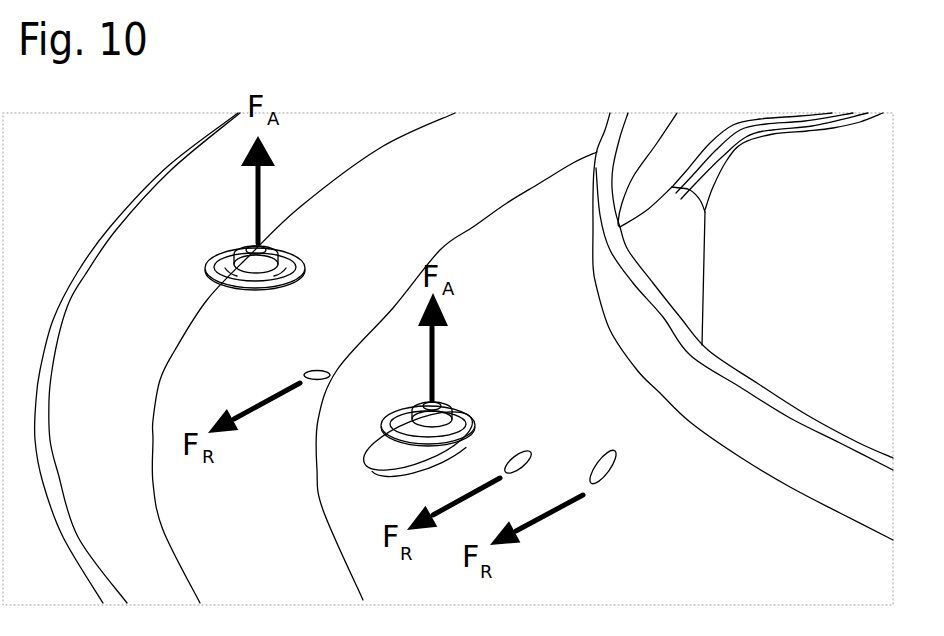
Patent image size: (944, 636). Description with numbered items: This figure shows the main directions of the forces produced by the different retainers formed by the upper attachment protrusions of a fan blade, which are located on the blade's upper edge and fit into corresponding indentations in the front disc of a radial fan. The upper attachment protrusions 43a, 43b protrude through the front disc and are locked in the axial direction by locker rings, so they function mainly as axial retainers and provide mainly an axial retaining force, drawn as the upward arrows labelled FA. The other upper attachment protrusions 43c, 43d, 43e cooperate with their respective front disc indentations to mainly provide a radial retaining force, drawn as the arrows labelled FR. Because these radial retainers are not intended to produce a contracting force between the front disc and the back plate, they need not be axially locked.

The upper attachment protrusion 43a is at (274, 252).
The upper attachment protrusion 43b is at (447, 407).
The upper attachment protrusion 43c is at (318, 375).
The upper attachment protrusion 43d is at (519, 458).
The upper attachment protrusion 43e is at (601, 462).